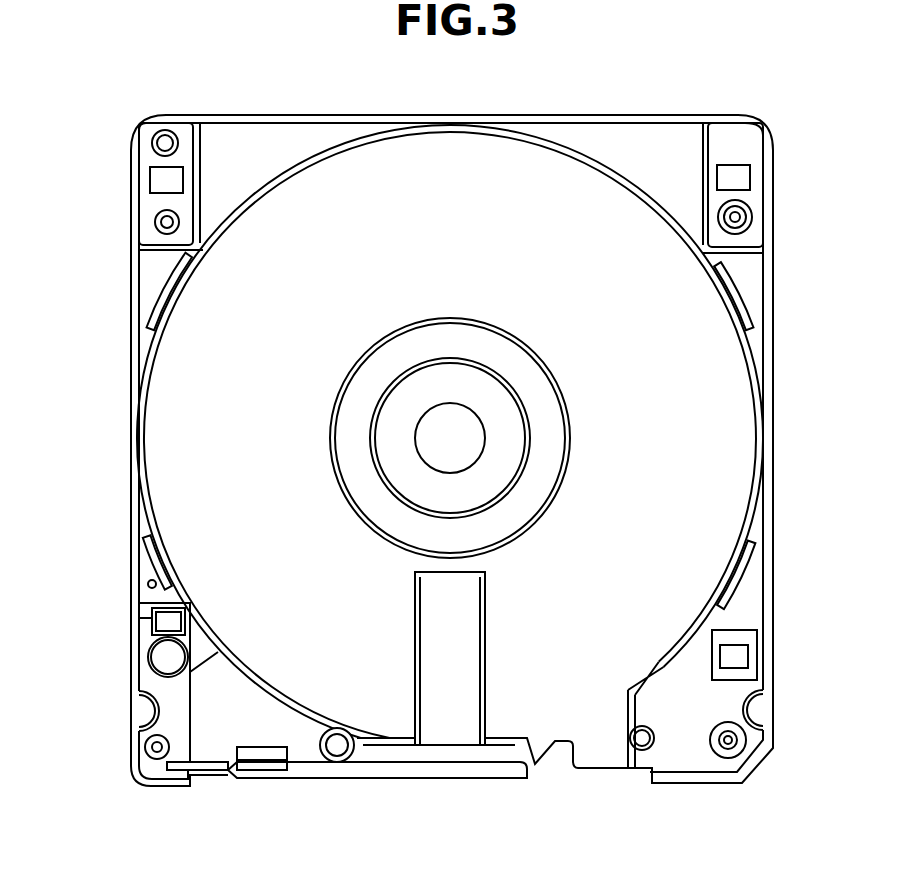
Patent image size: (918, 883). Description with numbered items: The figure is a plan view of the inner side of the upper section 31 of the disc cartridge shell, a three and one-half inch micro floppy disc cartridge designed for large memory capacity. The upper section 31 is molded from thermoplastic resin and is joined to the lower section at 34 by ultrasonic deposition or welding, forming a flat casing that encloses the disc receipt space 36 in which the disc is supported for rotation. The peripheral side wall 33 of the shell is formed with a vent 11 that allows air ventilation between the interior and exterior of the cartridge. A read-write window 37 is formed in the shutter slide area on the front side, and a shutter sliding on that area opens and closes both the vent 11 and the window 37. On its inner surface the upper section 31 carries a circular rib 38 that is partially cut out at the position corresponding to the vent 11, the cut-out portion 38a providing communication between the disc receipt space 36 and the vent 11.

The vent 11 is at (597, 770).
The upper section 31 is at (126, 215).
The peripheral side wall 33 is at (128, 333).
The joint 34 is at (168, 282).
The disc receipt space 36 is at (202, 427).
The read-write window 37 is at (428, 705).
The circular rib 38 is at (238, 675).
The positioning notch 38a is at (617, 712).